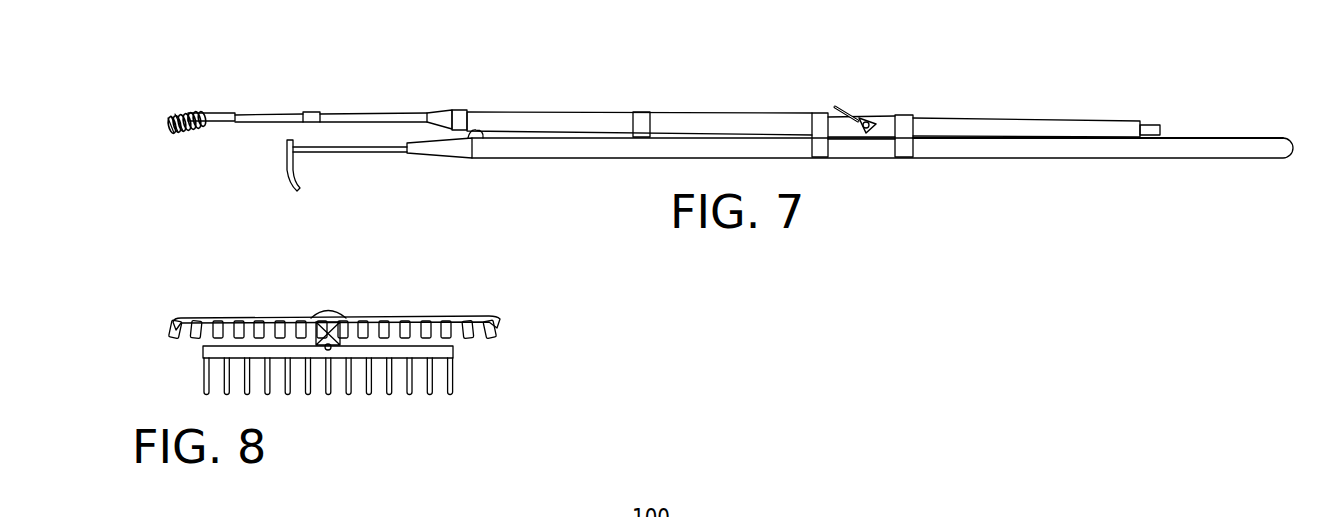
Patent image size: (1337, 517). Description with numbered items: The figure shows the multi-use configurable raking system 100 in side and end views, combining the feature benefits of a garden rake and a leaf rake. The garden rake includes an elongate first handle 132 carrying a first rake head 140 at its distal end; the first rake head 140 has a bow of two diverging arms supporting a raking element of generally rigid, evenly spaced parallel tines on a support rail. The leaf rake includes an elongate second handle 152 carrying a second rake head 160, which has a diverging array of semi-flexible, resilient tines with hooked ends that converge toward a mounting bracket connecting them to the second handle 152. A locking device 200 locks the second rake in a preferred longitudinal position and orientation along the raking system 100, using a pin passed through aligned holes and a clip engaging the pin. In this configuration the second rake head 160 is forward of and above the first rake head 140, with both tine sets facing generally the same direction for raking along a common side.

In FIG. 7, the raking system 100 is at (562, 72).
In FIG. 7, the first handle 132 is at (1020, 147).
In FIG. 7, the second handle 152 is at (1005, 128).
In FIG. 7, the locking device 200 is at (823, 98).
In FIG. 8, the second rake head 160 is at (473, 295).
In FIG. 8, the first rake head 140 is at (400, 403).